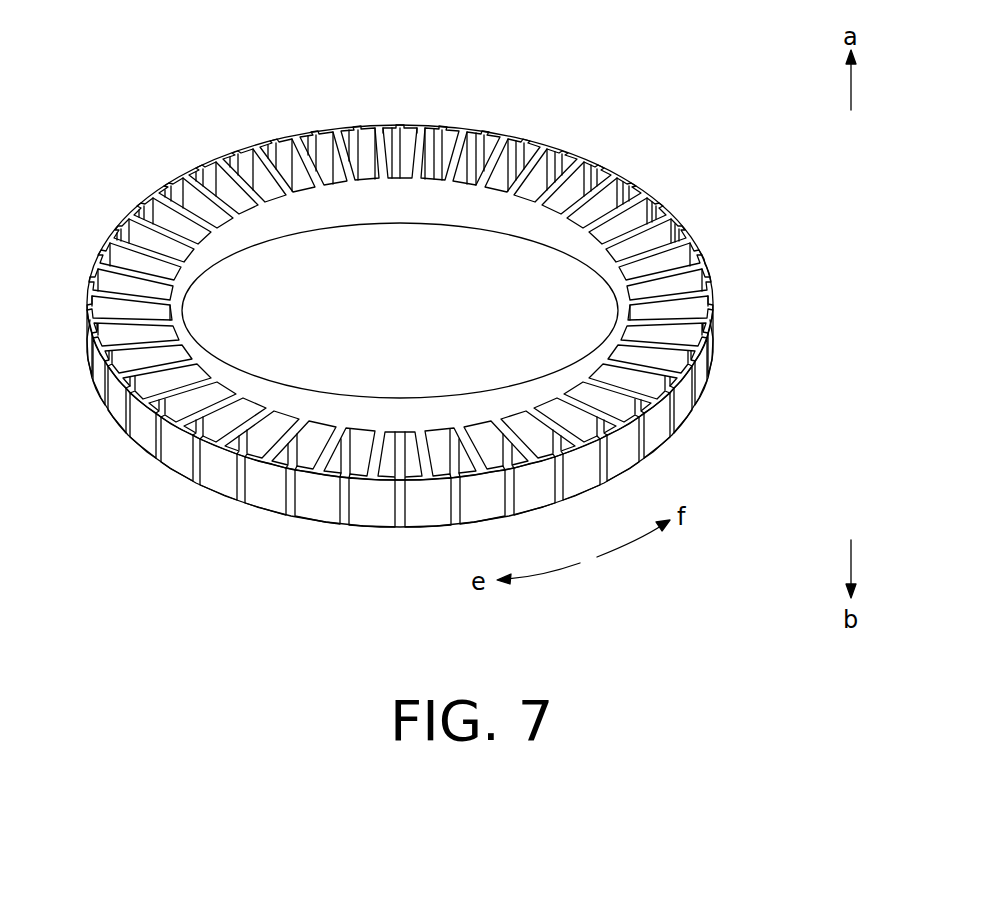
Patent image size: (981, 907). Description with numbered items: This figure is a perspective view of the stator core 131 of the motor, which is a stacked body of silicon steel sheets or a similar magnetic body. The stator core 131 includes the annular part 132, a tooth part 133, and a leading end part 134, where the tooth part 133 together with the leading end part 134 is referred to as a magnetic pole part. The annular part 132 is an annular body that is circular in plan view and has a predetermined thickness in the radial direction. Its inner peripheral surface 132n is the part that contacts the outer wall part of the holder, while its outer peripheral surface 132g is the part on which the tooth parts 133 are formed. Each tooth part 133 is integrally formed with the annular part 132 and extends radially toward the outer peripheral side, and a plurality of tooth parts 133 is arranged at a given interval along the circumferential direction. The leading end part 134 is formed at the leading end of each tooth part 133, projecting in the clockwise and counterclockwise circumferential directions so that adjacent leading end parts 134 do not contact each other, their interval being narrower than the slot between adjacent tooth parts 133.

The stator core 131 is at (421, 26).
The annular part 132 is at (597, 271).
The inner peripheral surface 132n is at (520, 229).
The outer peripheral surface 132g is at (320, 443).
The tooth part 133 is at (672, 287).
The leading end part 134 is at (675, 375).